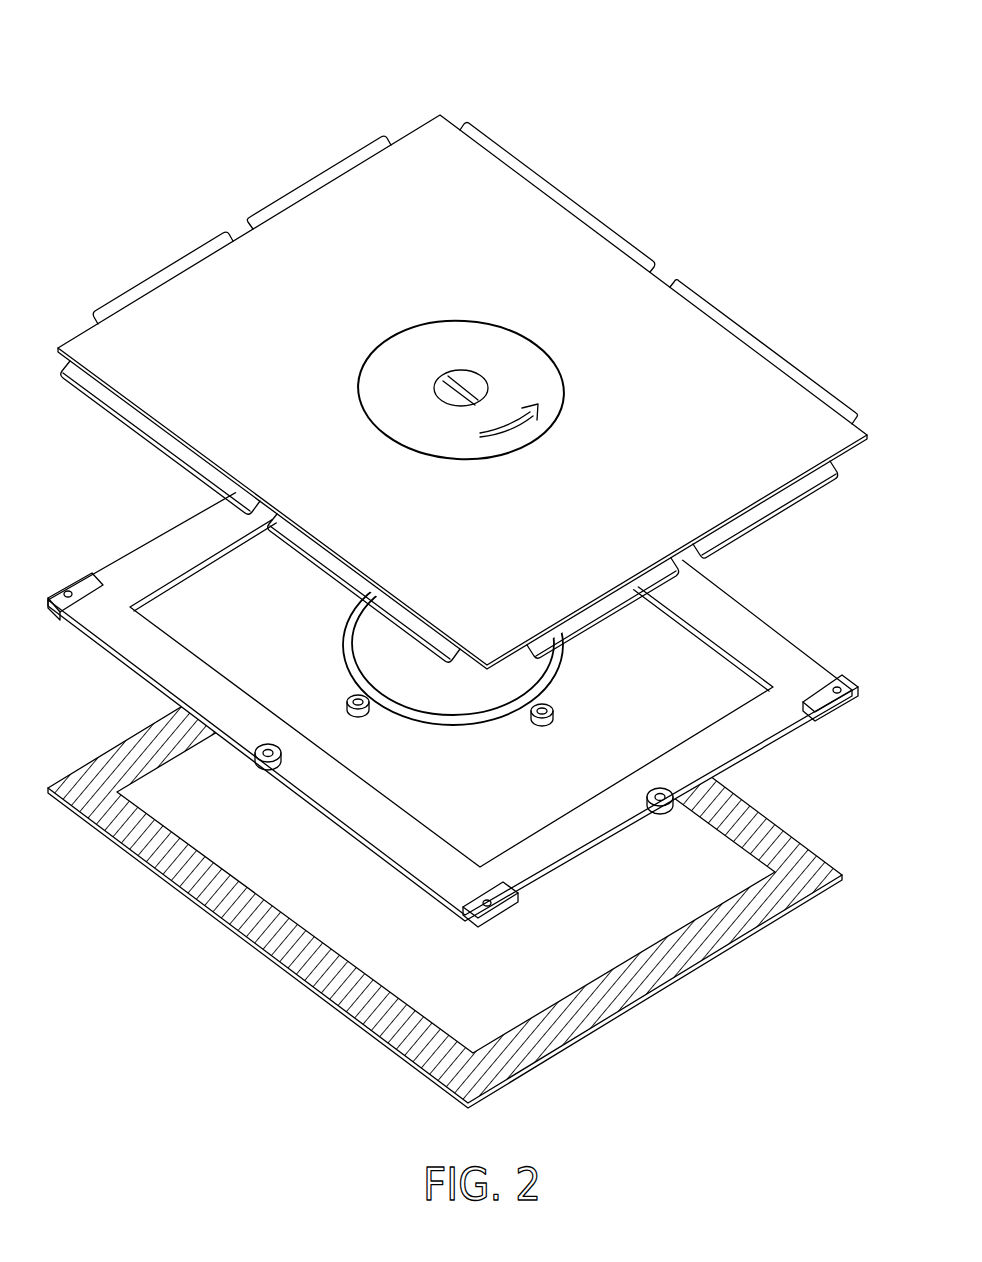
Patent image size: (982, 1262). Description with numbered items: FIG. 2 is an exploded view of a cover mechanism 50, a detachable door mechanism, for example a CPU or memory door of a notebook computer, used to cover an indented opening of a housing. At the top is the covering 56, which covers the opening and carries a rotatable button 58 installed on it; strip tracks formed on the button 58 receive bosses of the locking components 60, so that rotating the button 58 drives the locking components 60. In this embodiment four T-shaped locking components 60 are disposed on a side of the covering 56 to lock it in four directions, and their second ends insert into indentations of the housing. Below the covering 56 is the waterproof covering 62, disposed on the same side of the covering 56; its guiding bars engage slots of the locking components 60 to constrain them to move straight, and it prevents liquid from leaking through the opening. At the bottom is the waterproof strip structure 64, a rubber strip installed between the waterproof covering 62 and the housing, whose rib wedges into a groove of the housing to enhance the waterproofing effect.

The cover mechanism 50 is at (457, 560).
The covering 56 is at (462, 392).
The button 58 is at (510, 350).
The locking component 60 is at (800, 372).
The waterproof covering 62 is at (763, 640).
The waterproof strip structure 64 is at (760, 820).